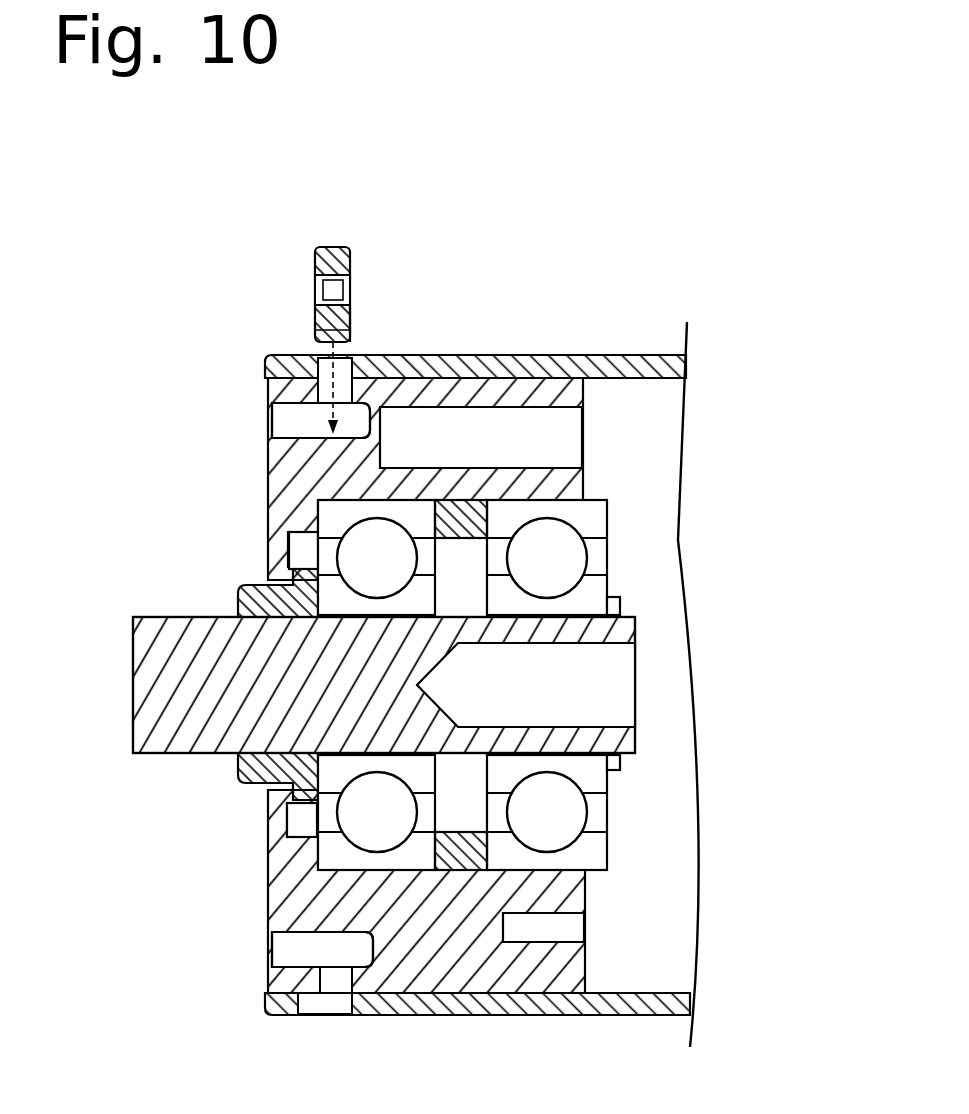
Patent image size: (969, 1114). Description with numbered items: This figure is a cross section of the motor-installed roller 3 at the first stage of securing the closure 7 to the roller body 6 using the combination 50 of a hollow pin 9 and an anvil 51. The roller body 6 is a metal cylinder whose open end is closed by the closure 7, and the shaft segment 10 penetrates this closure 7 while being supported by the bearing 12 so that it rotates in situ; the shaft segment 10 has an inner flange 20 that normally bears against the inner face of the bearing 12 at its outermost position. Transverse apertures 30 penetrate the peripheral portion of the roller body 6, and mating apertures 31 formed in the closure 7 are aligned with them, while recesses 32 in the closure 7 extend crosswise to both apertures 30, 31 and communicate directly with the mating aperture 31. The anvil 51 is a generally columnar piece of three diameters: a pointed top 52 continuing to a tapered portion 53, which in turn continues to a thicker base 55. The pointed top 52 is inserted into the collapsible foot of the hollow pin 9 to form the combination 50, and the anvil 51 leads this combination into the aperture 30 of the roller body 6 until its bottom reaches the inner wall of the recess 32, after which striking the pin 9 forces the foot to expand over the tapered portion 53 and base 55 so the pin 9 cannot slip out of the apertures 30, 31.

The motor-installed roller 3 is at (740, 278).
The roller body 6 is at (625, 355).
The closure 7 is at (280, 516).
The hollow pin 9 is at (322, 270).
The shaft segment 10 is at (148, 712).
The bearing 12 is at (592, 517).
The inner flange 20 is at (617, 603).
The transverse aperture 30 is at (353, 358).
The mating aperture 31 is at (293, 423).
The recess 32 is at (282, 448).
The combination 50 is at (320, 266).
The anvil 51 is at (317, 330).
The pointed top 52 is at (315, 287).
The tapered portion 53 is at (317, 312).
The base 55 is at (350, 316).